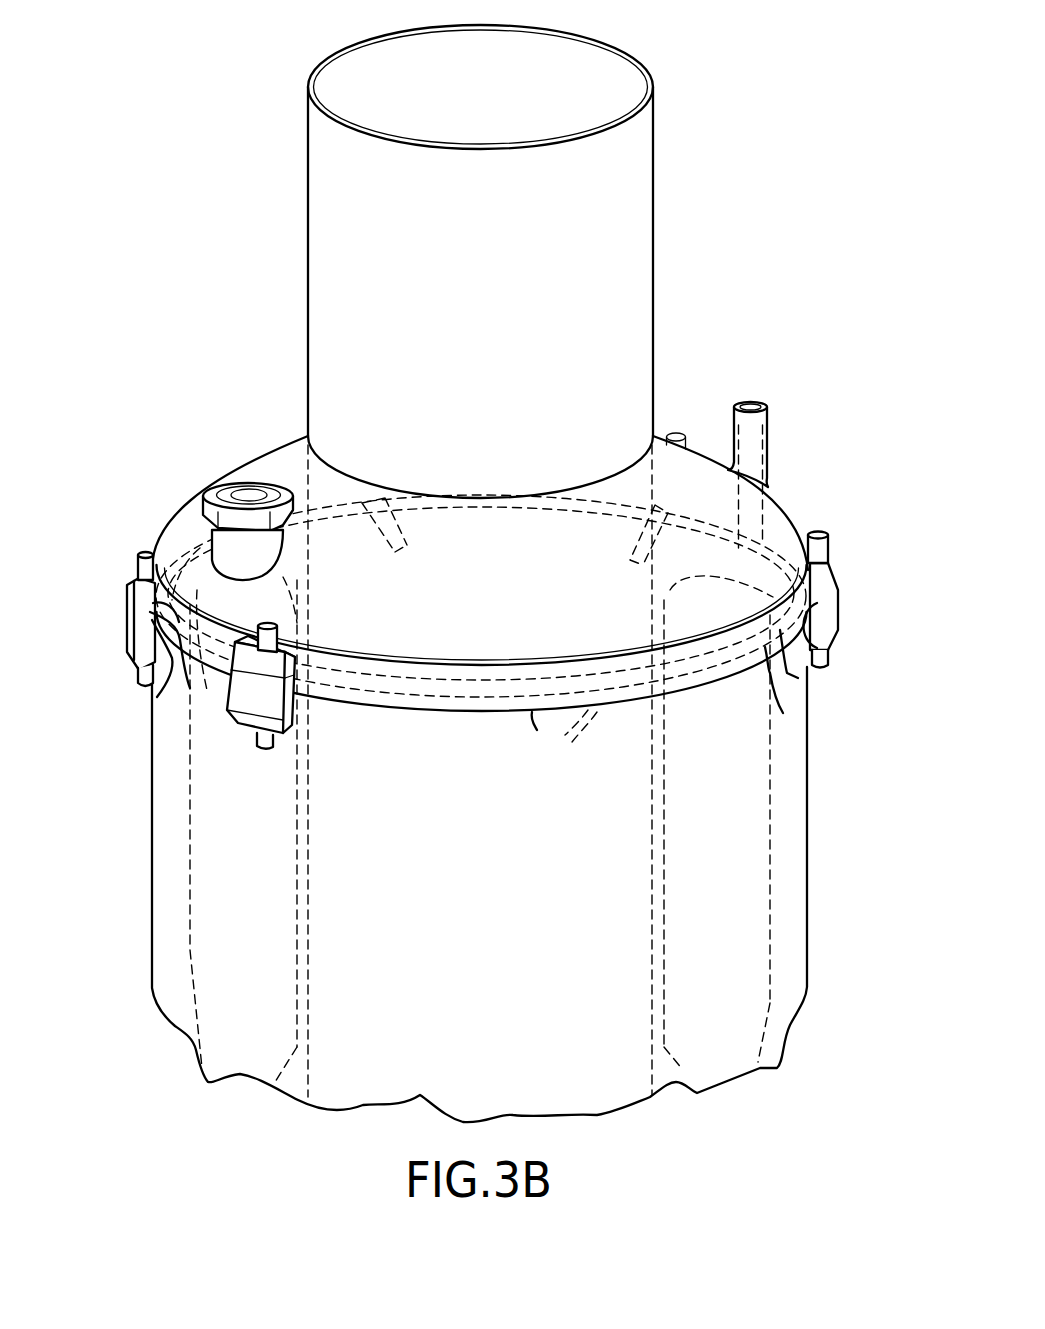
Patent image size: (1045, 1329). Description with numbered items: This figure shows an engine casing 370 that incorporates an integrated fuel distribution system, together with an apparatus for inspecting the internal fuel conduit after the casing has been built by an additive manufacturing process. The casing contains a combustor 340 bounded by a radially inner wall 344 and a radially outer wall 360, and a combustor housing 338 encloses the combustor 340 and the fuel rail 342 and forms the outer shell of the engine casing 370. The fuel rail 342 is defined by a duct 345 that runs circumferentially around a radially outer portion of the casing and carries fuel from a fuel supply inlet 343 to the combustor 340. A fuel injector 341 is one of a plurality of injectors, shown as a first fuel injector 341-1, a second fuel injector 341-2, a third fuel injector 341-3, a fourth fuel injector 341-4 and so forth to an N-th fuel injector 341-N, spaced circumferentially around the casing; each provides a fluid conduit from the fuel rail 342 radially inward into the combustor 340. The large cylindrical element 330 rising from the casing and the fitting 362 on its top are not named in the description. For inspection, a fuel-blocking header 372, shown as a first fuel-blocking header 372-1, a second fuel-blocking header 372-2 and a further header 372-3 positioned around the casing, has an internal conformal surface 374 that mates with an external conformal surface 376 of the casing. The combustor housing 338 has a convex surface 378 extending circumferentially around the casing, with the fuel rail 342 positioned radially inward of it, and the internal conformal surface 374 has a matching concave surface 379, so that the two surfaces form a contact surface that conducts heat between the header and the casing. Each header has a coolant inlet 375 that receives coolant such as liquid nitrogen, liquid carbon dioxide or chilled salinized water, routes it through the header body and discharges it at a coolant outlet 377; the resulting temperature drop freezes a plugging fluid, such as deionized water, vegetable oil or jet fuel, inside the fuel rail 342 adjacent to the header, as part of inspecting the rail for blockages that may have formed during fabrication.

The cylindrical housing 330 is at (653, 170).
The combustor housing 338 is at (153, 917).
The combustor 340 is at (188, 767).
The fuel injector 341 is at (782, 630).
The first fuel injector 341-1 is at (783, 713).
The second fuel injector 341-2 is at (580, 720).
The third fuel injector 341-3 is at (298, 705).
The fourth latch receiver 341-4 is at (190, 688).
The N-th fuel injector 341-N is at (657, 534).
The fuel rail 342 is at (628, 693).
The fuel supply inlet 343 is at (760, 429).
The radially inner wall 344 is at (297, 822).
The duct 345 is at (443, 705).
The radially outer wall 360 is at (190, 834).
The fitting 362 is at (212, 517).
The engine casing 370 is at (133, 268).
The fuel-blocking header 372 is at (838, 583).
The first fuel-blocking header 372-1 is at (838, 618).
The second fuel-blocking header 372-2 is at (295, 695).
The third clamp 372-3 is at (127, 602).
The internal conformal surface 374 is at (296, 684).
The coolant inlet 375 is at (137, 557).
The external conformal surface 376 is at (838, 608).
The coolant outlet 377 is at (136, 672).
The convex surface 378 is at (507, 712).
The concave surface 379 is at (157, 697).